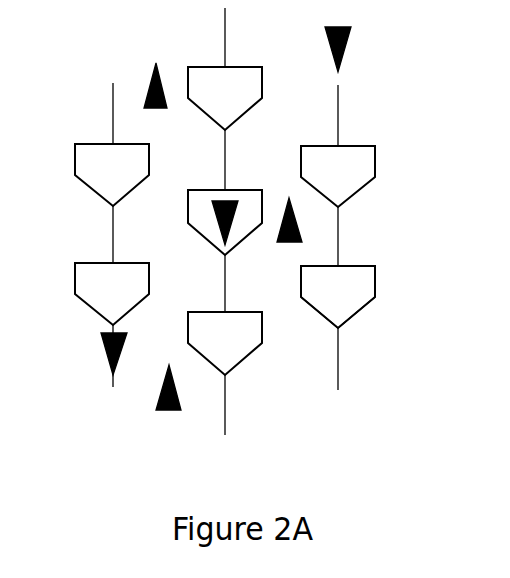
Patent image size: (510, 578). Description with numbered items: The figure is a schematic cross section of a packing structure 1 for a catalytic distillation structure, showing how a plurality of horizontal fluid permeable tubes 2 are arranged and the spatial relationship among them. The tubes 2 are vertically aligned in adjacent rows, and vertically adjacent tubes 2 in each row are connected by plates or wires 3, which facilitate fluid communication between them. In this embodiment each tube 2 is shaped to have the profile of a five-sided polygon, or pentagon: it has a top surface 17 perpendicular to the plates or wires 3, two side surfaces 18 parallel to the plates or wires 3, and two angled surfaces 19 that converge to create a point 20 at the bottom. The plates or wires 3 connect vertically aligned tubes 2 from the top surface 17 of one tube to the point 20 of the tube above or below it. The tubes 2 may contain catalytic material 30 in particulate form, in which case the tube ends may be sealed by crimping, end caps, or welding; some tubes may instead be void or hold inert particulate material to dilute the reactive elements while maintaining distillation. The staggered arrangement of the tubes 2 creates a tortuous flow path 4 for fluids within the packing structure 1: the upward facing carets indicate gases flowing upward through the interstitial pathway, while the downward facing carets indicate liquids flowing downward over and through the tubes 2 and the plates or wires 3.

The packing structure 1 is at (352, 223).
The horizontal fluid permeable tubes 2 is at (235, 347).
The plates or wires 3 is at (113, 238).
The tortuous flow path 4 is at (150, 237).
The top surface 17 is at (357, 266).
The side surfaces 18 is at (375, 282).
The angled surfaces 19 is at (357, 313).
The point 20 is at (338, 328).
The catalytic material 30 is at (325, 182).